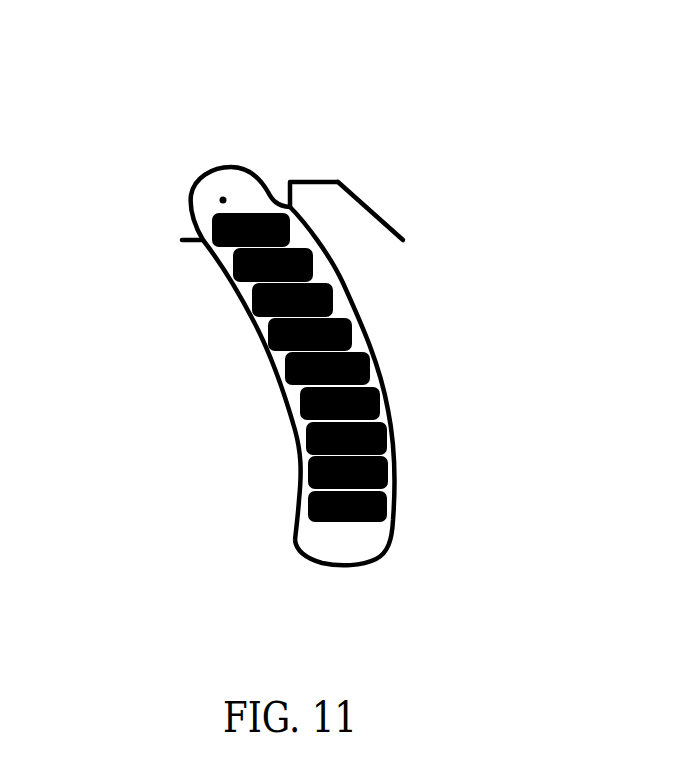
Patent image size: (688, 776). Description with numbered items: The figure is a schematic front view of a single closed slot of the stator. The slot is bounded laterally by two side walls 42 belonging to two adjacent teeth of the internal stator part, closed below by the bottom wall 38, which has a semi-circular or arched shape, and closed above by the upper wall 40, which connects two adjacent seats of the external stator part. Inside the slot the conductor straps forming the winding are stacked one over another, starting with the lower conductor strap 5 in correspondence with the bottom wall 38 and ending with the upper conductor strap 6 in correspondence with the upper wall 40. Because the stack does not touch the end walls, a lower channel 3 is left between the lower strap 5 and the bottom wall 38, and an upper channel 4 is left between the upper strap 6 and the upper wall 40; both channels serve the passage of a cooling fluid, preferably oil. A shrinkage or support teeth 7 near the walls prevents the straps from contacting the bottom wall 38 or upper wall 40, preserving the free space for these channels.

The lower channel 3 is at (357, 542).
The upper channel 4 is at (223, 200).
The lower conductor (strap) 5 is at (337, 528).
The upper conductor (strap) 6 is at (233, 212).
The support teeth 7 is at (295, 207).
The bottom wall 38 is at (345, 563).
The upper wall 40 is at (205, 182).
The side walls 42 is at (380, 375).